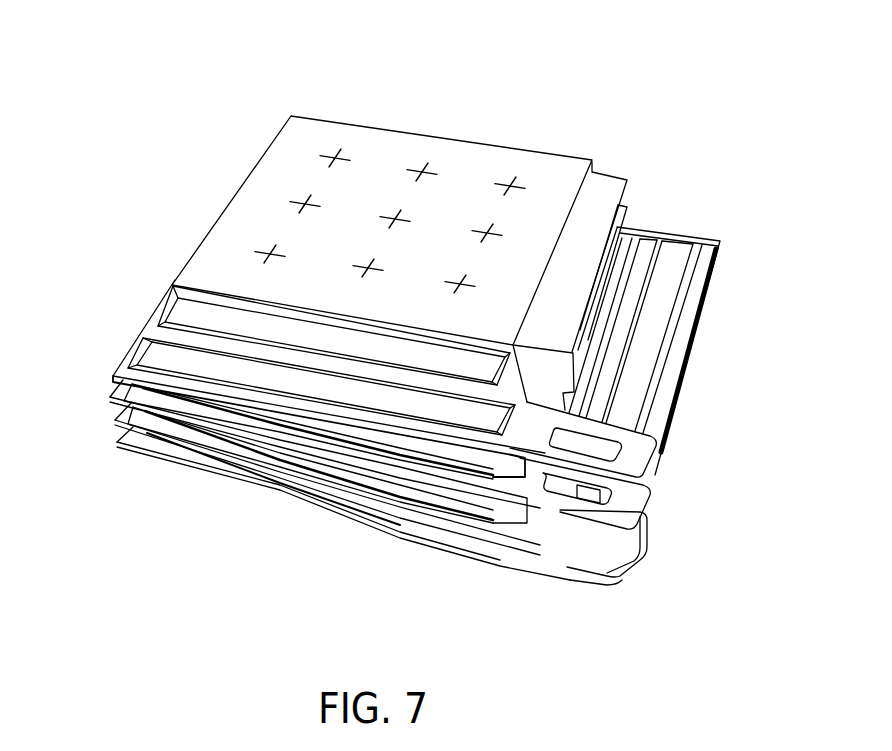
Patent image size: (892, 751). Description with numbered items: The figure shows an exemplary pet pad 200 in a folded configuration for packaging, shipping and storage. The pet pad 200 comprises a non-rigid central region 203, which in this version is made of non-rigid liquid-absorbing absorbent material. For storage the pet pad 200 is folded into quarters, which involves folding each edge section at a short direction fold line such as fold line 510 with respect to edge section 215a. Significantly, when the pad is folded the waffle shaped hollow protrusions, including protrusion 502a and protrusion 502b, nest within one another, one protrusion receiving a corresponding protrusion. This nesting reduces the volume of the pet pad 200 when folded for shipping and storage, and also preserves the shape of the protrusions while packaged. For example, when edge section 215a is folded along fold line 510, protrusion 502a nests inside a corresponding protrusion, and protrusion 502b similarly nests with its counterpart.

The pet pad 200 is at (236, 80).
The central region 203 is at (463, 172).
The protrusion 502a is at (142, 344).
The protrusion 502b is at (174, 302).
The fold line 510 is at (120, 367).
The edge section 215a is at (423, 428).